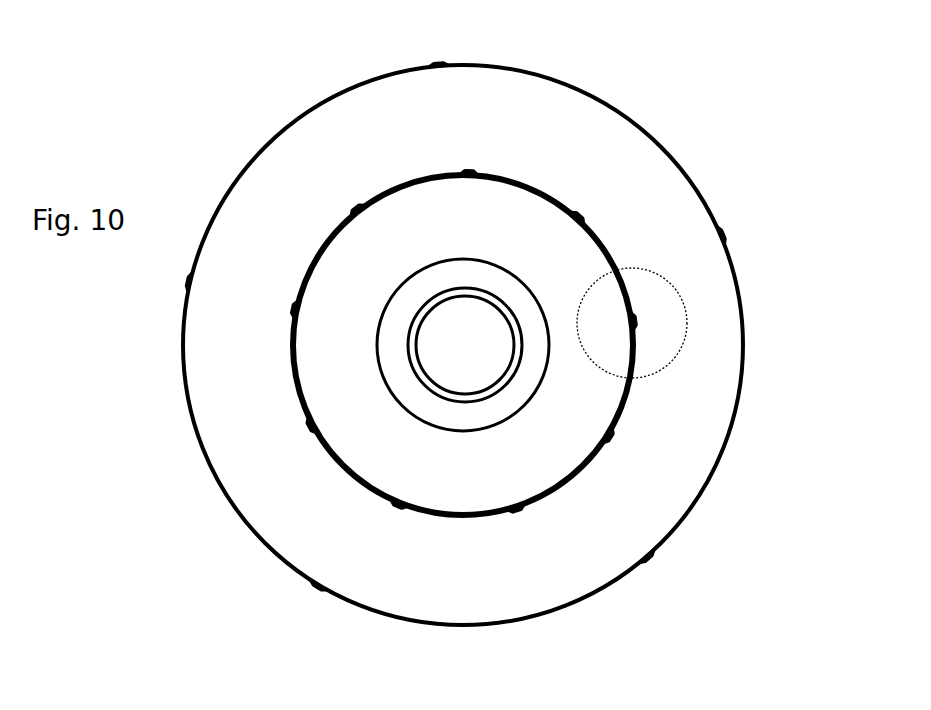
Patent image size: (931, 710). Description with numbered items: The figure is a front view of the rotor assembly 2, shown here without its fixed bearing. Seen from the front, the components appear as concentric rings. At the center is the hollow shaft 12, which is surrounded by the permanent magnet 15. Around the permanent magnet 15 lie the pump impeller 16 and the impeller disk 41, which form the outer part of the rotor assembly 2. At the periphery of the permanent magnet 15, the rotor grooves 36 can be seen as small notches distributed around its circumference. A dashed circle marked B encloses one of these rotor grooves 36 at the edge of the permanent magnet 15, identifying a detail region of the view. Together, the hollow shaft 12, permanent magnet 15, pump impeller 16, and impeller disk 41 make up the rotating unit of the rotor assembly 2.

The rotor assembly 2 is at (715, 113).
The pump impeller 16 is at (333, 95).
The impeller disk 41 is at (670, 482).
The permanent magnet 15 is at (375, 285).
The hollow shaft 12 is at (507, 395).
The rotor grooves 36 is at (478, 170).
The detail B is at (673, 282).